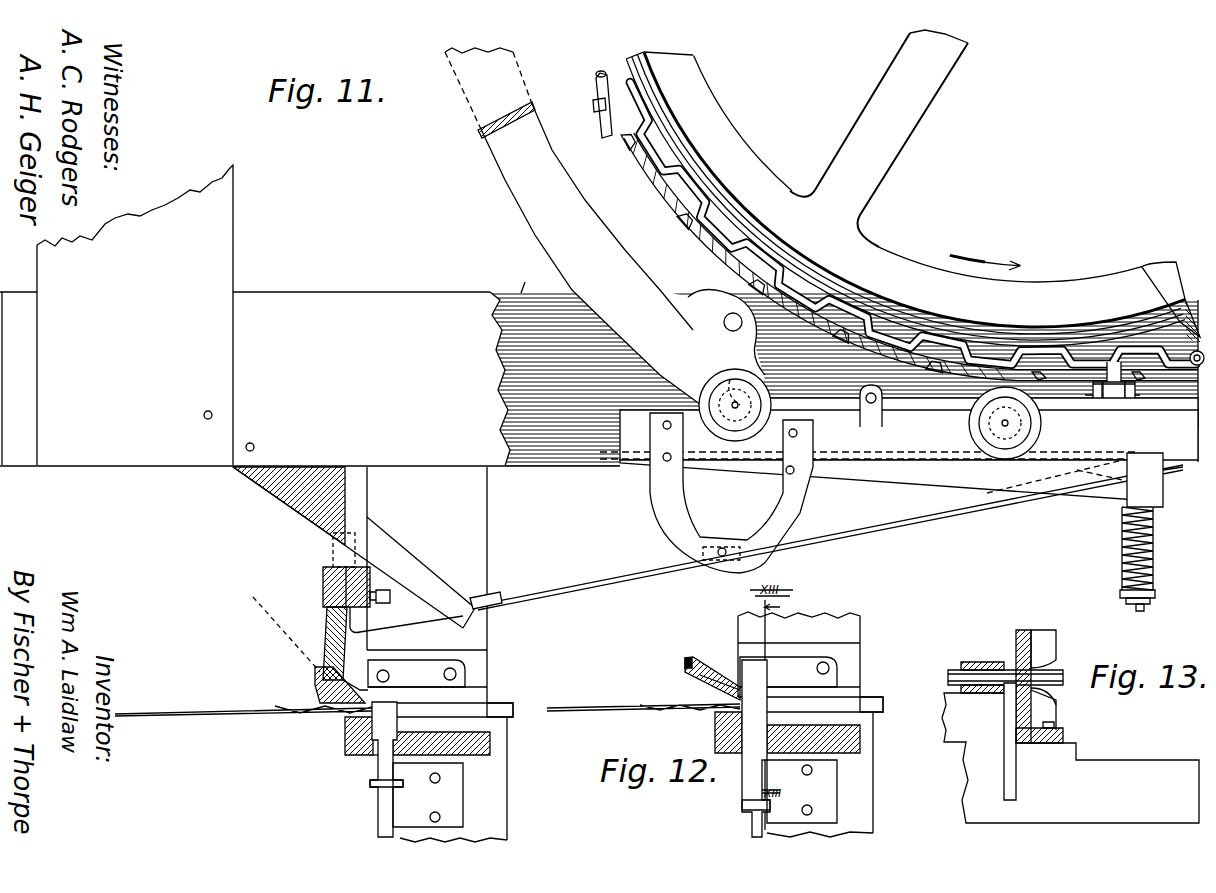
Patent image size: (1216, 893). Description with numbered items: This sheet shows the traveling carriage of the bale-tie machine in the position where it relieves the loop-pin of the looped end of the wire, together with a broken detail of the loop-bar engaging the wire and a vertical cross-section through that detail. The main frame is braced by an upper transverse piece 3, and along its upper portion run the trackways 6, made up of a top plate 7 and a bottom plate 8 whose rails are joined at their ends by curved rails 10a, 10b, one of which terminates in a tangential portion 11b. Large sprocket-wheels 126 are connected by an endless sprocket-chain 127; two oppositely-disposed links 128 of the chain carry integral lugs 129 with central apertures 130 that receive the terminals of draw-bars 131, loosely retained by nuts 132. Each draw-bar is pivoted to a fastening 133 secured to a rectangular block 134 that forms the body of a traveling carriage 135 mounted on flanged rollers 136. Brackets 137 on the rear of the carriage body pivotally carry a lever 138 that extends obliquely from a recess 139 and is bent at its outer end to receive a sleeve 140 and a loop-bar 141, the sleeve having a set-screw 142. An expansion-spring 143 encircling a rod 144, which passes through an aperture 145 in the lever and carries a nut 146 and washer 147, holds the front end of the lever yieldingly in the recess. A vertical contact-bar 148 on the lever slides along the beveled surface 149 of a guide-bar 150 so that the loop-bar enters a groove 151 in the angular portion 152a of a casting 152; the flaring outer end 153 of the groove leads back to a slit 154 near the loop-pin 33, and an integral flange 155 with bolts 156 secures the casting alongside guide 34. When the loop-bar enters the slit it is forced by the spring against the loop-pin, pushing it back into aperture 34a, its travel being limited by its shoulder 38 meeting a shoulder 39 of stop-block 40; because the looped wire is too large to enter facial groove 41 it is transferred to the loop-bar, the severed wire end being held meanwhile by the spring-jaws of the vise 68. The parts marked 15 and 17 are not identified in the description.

In FIG. 11, the upper transverse piece 3 is at (310, 315).
In FIG. 11, the trackway 6 is at (361, 274).
In FIG. 11, the top plate 7 is at (814, 379).
In FIG. 11, the bottom plate 8 is at (518, 277).
In FIG. 11, the curved rail 10a is at (488, 87).
In FIG. 11, the curved rail 10b is at (605, 232).
In FIG. 11, the tangential portion 11b is at (672, 336).
In FIG. 11, the frame block 15 is at (427, 588).
In FIG. 12, the frame block 15 is at (840, 625).
In FIG. 13, the frame block 15 is at (1070, 758).
In FIG. 11, the wire 17 is at (172, 714).
In FIG. 12, the wire 17 is at (592, 714).
In FIG. 13, the wire 17 is at (1010, 670).
In FIG. 11, the loop-pin 33 is at (386, 769).
In FIG. 12, the loop-pin 33 is at (756, 748).
In FIG. 13, the loop-pin 33 is at (952, 668).
In FIG. 11, the guide 34 is at (345, 738).
In FIG. 12, the guide 34 is at (716, 738).
In FIG. 13, the guide 34 is at (975, 660).
In FIG. 11, the aperture 34a is at (375, 756).
In FIG. 11, the integral shoulder 38 is at (395, 789).
In FIG. 12, the integral shoulder 38 is at (750, 808).
In FIG. 11, the shoulder 39 is at (420, 817).
In FIG. 12, the shoulder 39 is at (790, 810).
In FIG. 11, the stop-block 40 is at (450, 802).
In FIG. 12, the stop-block 40 is at (802, 791).
In FIG. 11, the facial groove 41 is at (443, 729).
In FIG. 12, the facial groove 41 is at (810, 725).
In FIG. 11, the vise 68 is at (510, 720).
In FIG. 12, the vise 68 is at (880, 712).
In FIG. 11, the sprocket-wheel 126 is at (921, 231).
In FIG. 11, the endless sprocket-chain 127 is at (695, 219).
In FIG. 11, the link 128 is at (1102, 380).
In FIG. 11, the integral lug 129 is at (1128, 412).
In FIG. 11, the central aperture 130 is at (1137, 395).
In FIG. 11, the draw-bar 131 is at (933, 392).
In FIG. 11, the nut 132 is at (1143, 388).
In FIG. 11, the fastening 133 is at (860, 414).
In FIG. 11, the rectangular block 134 is at (899, 448).
In FIG. 11, the traveling carriage 135 is at (878, 492).
In FIG. 11, the flanged roller 136 is at (712, 383).
In FIG. 11, the bracket 137 is at (703, 552).
In FIG. 11, the lever 138 is at (830, 543).
In FIG. 11, the recess 139 is at (1073, 468).
In FIG. 11, the sleeve 140 is at (322, 590).
In FIG. 11, the loop-bar 141 is at (326, 630).
In FIG. 12, the loop-bar 141 is at (752, 662).
In FIG. 13, the loop-bar 141 is at (1040, 686).
In FIG. 11, the set-screw 142 is at (380, 603).
In FIG. 11, the expansion-spring 143 is at (1155, 560).
In FIG. 11, the rod 144 is at (1140, 611).
In FIG. 11, the aperture 145 is at (1163, 490).
In FIG. 11, the nut 146 is at (1150, 601).
In FIG. 11, the washer 147 is at (1155, 594).
In FIG. 11, the vertical contact-bar 148 is at (491, 598).
In FIG. 11, the beveled surface 149 is at (455, 558).
In FIG. 11, the guide-bar 150 is at (348, 547).
In FIG. 11, the groove 151 is at (344, 684).
In FIG. 12, the groove 151 is at (710, 677).
In FIG. 11, the casting 152 is at (416, 673).
In FIG. 12, the casting 152 is at (788, 672).
In FIG. 13, the casting 152 is at (1037, 675).
In FIG. 11, the angular portion 152a is at (313, 688).
In FIG. 12, the outer end 153 is at (688, 670).
In FIG. 13, the outer end 153 is at (1056, 660).
In FIG. 11, the slit 154 is at (427, 697).
In FIG. 12, the slit 154 is at (800, 690).
In FIG. 13, the slit 154 is at (1045, 692).
In FIG. 11, the integral flange 155 is at (462, 670).
In FIG. 12, the integral flange 155 is at (825, 643).
In FIG. 13, the integral flange 155 is at (1063, 735).
In FIG. 12, the bolt 156 is at (830, 668).
In FIG. 13, the bolt 156 is at (1045, 745).